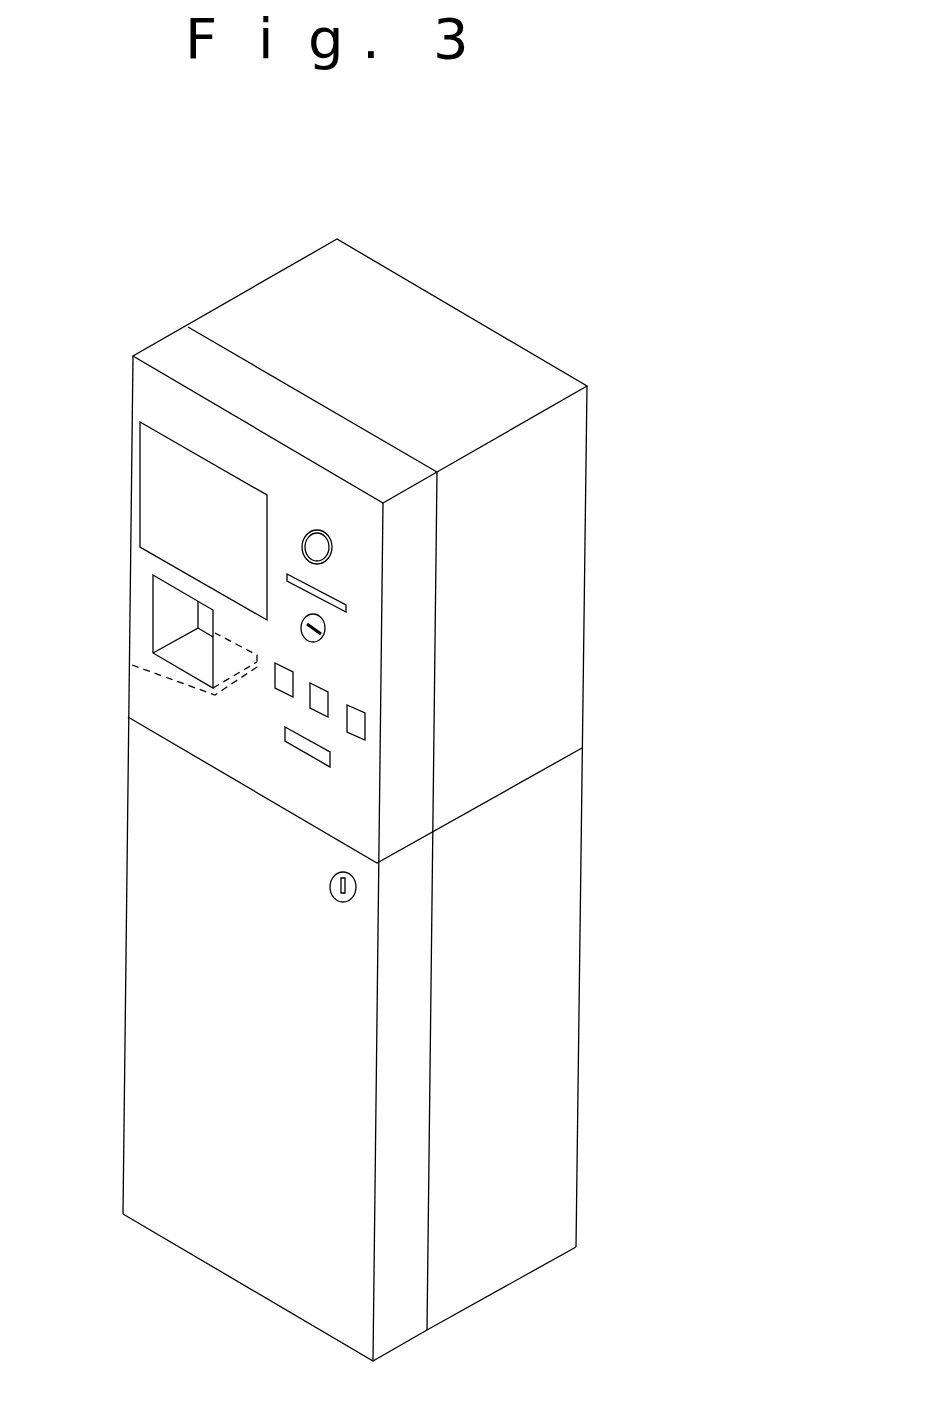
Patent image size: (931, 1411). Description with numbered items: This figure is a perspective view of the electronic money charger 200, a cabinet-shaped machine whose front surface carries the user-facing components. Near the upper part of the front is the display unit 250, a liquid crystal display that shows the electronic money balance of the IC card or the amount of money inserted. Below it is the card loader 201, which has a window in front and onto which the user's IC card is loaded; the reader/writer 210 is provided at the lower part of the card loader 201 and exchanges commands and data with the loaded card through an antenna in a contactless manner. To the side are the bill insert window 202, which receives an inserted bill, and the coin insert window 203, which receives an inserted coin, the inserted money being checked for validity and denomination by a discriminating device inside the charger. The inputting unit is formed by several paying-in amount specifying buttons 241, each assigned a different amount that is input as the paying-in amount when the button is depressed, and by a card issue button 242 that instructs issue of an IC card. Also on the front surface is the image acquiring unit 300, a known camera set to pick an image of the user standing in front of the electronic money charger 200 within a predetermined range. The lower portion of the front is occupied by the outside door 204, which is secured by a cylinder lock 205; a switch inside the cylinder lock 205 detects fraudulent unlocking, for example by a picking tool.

The electronic money charger 200 is at (497, 318).
The card loader 201 is at (162, 638).
The bill insert window 202 is at (335, 600).
The coin insert window 203 is at (328, 628).
The outside door 204 is at (133, 928).
The cylinder lock 205 is at (353, 888).
The reader/writer 210 is at (160, 665).
The paying-in amount specifying buttons 241 is at (350, 710).
The card issue button 242 is at (330, 760).
The display unit 250 is at (157, 520).
The image acquiring unit 300 is at (322, 547).